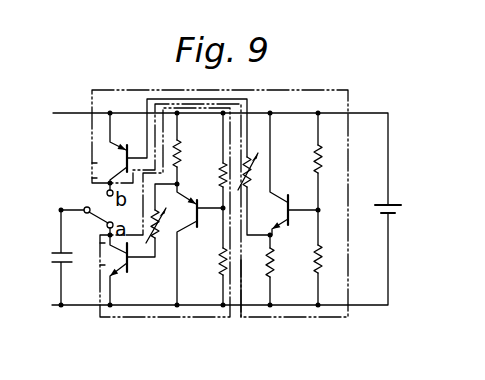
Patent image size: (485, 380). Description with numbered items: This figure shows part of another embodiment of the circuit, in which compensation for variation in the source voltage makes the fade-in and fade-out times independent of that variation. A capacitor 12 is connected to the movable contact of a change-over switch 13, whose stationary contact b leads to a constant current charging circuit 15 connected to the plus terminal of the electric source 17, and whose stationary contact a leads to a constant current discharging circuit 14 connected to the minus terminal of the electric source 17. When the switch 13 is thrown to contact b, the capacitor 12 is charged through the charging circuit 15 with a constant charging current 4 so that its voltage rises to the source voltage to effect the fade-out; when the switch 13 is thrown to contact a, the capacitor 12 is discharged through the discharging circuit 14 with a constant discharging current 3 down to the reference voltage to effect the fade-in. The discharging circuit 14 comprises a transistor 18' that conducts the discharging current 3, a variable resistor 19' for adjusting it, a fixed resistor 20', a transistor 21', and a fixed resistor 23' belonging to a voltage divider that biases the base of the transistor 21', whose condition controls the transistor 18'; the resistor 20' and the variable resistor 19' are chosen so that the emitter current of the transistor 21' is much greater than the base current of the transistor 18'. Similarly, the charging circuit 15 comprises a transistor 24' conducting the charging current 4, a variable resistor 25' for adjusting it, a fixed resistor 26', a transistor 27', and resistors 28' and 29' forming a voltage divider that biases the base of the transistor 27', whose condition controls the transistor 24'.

The constant discharging current I3 3 is at (127, 270).
The constant charging current I4 4 is at (100, 170).
The capacitor 12 is at (52, 262).
The change-over switch 13 is at (85, 207).
The constant current discharging circuit 14 is at (158, 323).
The constant current charging circuit 15 is at (161, 86).
The electric source 17 is at (398, 209).
The transistor 18' is at (153, 242).
The variable resistor 19' is at (193, 256).
The fixed resistor 20' is at (191, 148).
The transistor 21' is at (200, 244).
The fixed resistor 23' is at (208, 160).
The transistor 24' is at (190, 167).
The variable resistor 25' is at (272, 171).
The fixed resistor 26' is at (286, 270).
The transistor 27' is at (294, 184).
The resistor 28' is at (347, 161).
The resistor 29' is at (347, 257).